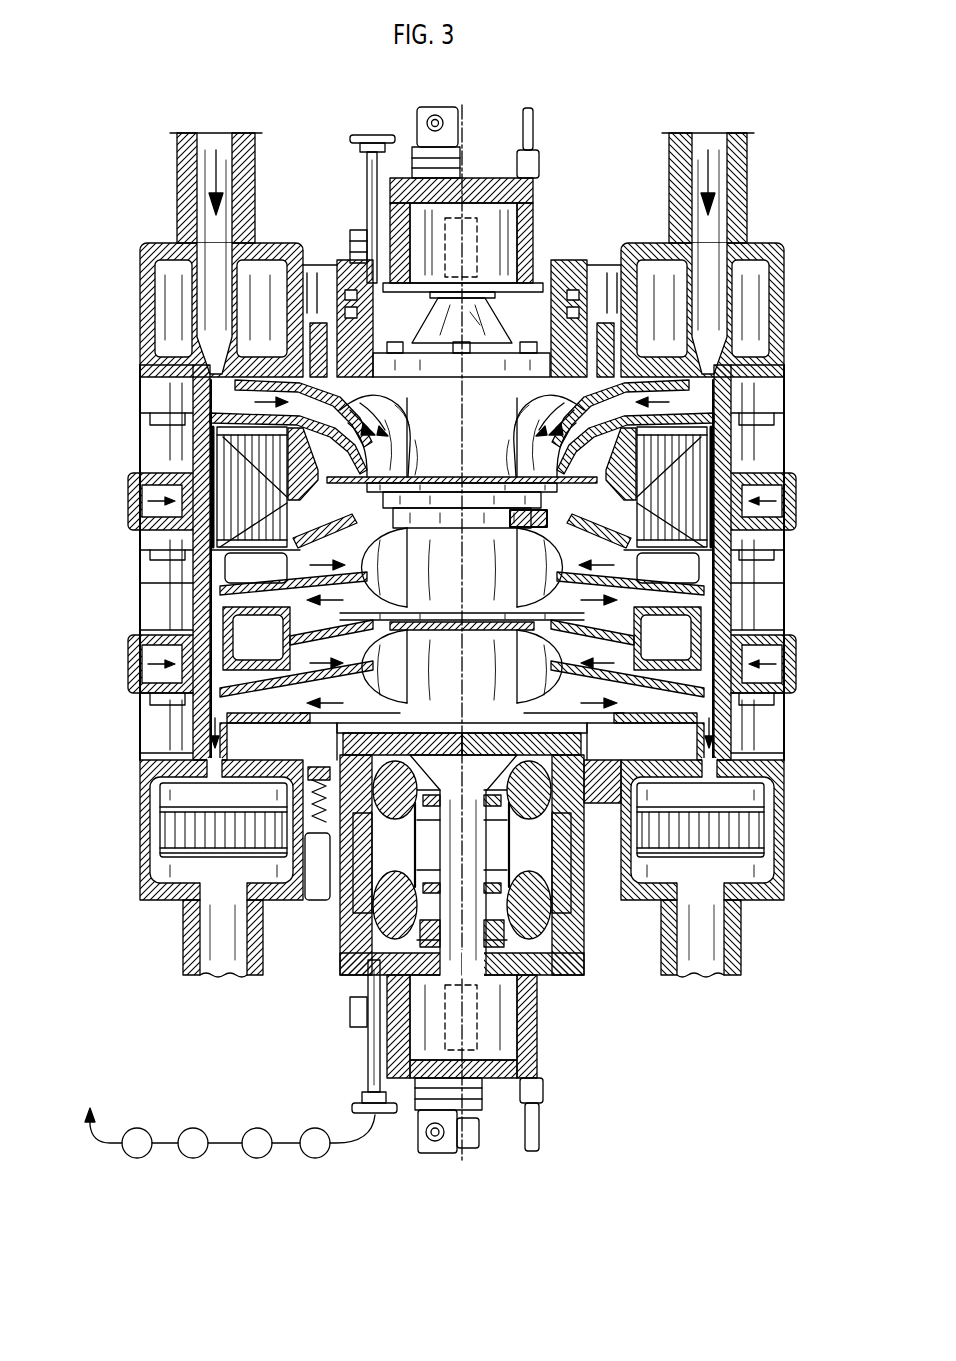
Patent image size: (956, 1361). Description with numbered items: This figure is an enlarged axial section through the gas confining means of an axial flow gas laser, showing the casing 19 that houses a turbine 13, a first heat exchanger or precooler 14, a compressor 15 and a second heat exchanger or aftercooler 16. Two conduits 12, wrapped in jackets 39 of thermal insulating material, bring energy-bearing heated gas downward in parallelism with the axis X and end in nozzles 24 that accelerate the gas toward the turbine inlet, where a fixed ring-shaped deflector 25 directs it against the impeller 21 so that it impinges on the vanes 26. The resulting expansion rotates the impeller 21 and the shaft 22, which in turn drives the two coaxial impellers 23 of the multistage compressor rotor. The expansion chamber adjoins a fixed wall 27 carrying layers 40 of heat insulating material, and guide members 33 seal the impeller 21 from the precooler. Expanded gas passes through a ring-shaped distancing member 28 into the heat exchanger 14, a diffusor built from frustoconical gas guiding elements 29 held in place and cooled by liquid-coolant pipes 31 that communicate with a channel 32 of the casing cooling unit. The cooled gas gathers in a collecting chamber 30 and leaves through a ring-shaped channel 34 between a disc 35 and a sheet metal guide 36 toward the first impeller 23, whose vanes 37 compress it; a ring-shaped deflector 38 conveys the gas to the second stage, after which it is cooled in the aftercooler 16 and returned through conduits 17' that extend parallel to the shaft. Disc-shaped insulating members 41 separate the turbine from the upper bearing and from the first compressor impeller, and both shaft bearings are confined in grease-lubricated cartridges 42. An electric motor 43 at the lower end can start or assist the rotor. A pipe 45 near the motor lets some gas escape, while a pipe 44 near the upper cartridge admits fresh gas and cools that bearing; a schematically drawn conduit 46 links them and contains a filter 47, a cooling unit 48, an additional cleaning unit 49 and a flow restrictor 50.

The conduit 12 is at (212, 152).
The turbine 13 is at (411, 310).
The first heat exchanger or precooler 14 is at (252, 491).
The compressor 15 is at (444, 562).
The second heat exchanger or aftercooler 16 is at (210, 833).
The conduit 17' is at (461, 938).
The casing 19 is at (473, 867).
The rotary impeller 21 is at (450, 434).
The shaft 22 is at (434, 344).
The impeller 23 is at (495, 591).
The nozzle 24 is at (182, 360).
The ring-shaped deflector 25 is at (250, 352).
The vanes 26 is at (523, 413).
The fixed cover or wall 27 is at (235, 408).
The ring-shaped distancing member 28 is at (453, 471).
The gas guiding elements 29 is at (750, 397).
The collecting chamber 30 is at (259, 579).
The pipes 31 is at (140, 500).
The channel 32 is at (285, 500).
The guide vanes or members 33 is at (660, 465).
The ring-shaped channel 34 is at (220, 692).
The disc 35 is at (215, 585).
The sheet metal guide 36 is at (350, 541).
The vanes 37 is at (462, 636).
The ring-shaped deflector 38 is at (210, 612).
The jacket 39 is at (180, 180).
The layers of heat insulating material 40 is at (378, 393).
The disc-shaped member 41 is at (508, 355).
The cartridge 42 is at (439, 247).
The electric motor 43 is at (590, 973).
The pipe 44 is at (368, 195).
The pipe 45 is at (362, 1053).
The conduit 46 is at (350, 1147).
The filter 47 is at (308, 1150).
The cooling unit 48 is at (250, 1150).
The additional cleaning unit 49 is at (190, 1150).
The flow restrictor 50 is at (135, 1150).
The axis X is at (463, 857).